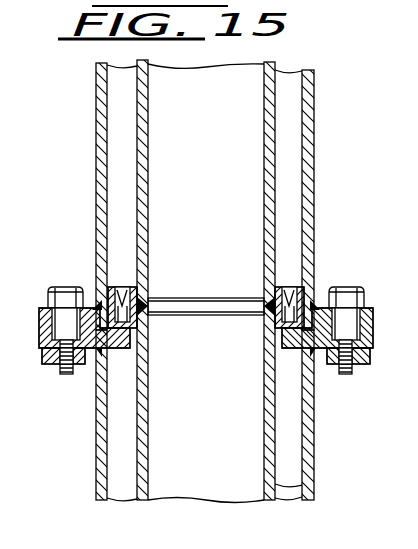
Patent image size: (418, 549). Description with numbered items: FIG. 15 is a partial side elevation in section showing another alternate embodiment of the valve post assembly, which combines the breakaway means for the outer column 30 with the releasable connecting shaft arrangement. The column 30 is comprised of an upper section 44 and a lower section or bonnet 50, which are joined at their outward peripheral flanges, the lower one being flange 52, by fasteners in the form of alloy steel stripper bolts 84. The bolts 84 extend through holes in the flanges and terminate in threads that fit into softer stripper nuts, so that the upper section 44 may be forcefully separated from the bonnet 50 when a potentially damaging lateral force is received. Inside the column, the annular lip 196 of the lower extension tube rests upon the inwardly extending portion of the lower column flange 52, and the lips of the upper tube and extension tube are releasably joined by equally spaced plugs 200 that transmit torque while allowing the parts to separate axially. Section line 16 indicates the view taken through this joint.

The cylindrical column 30 is at (93, 96).
The upper section 44 is at (315, 104).
The section line 16- 16 is at (62, 247).
The stripper bolts 84 is at (52, 292).
The plugs 200 is at (284, 290).
The annular lip 196 is at (264, 317).
The flange 52 is at (43, 333).
The lower section or bonnet 50 is at (96, 440).